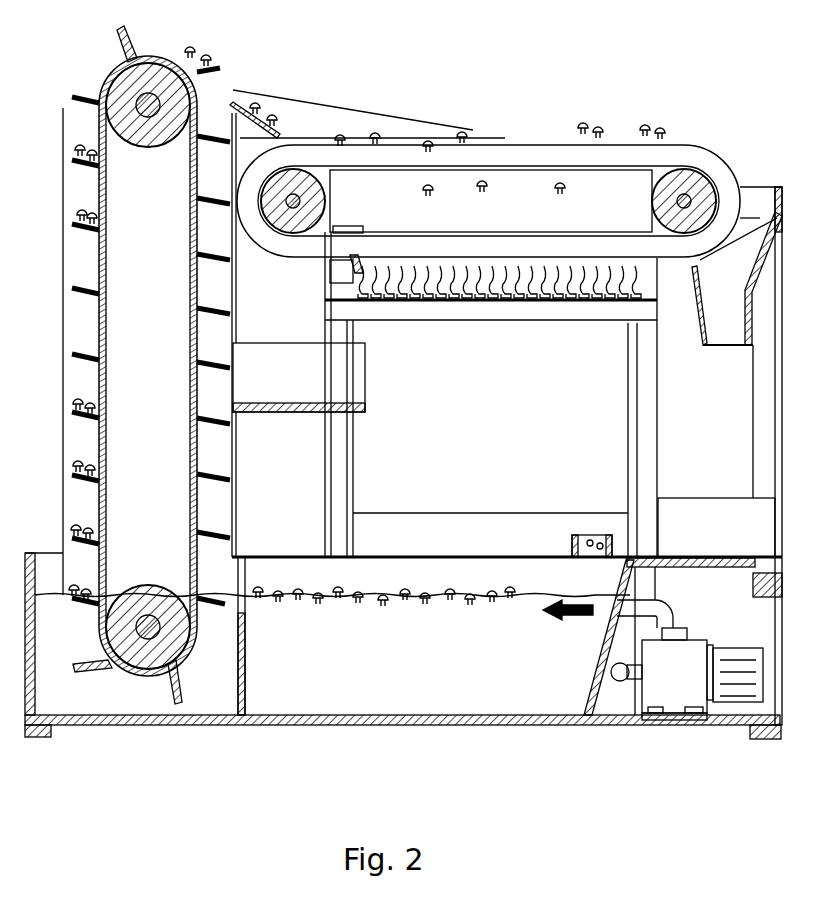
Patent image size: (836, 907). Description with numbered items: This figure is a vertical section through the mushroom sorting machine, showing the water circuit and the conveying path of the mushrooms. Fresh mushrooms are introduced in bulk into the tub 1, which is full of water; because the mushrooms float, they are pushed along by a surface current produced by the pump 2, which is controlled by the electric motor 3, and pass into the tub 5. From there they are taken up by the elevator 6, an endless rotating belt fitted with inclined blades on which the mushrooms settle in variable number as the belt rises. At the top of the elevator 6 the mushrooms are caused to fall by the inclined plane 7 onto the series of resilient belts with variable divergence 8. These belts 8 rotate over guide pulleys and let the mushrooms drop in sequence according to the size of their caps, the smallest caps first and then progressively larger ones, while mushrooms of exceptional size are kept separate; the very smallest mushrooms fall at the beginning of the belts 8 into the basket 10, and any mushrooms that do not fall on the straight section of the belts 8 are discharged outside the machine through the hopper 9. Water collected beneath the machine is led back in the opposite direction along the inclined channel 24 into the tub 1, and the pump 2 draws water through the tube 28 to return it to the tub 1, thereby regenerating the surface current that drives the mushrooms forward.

The tub 1 is at (537, 668).
The pump 2 is at (676, 678).
The electric motor 3 is at (731, 673).
The tub 5 is at (50, 667).
The elevator 6 is at (98, 322).
The inclined plane 7 is at (263, 130).
The resilient belts with variable divergence 8 is at (403, 157).
The hoppers 9 is at (740, 267).
The basket 10 is at (326, 394).
The inclined channel 24 is at (577, 558).
The tube 28 is at (620, 672).